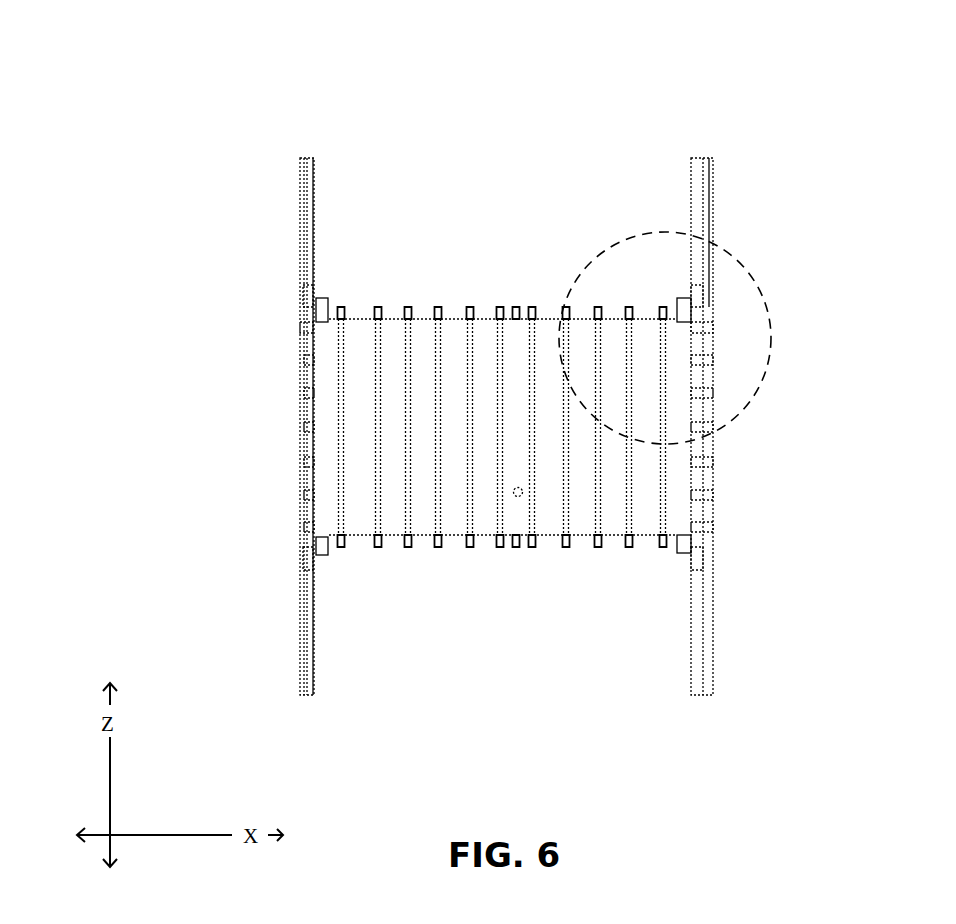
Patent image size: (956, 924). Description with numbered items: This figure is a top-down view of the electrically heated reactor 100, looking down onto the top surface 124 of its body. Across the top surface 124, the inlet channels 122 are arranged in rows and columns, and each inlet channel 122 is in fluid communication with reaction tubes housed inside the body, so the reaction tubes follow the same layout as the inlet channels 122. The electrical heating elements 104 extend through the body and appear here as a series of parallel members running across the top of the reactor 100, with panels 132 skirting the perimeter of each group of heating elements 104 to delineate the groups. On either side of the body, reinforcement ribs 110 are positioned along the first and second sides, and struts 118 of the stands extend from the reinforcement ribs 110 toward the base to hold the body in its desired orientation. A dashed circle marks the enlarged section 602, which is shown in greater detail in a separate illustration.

The reactor 100 is at (494, 350).
The electrical heating element 104 is at (432, 307).
The reinforcement rib 110 is at (262, 426).
The strut 118 is at (708, 193).
The inlet channel 122 is at (518, 496).
The top surface 124 is at (320, 347).
The panel 132 is at (515, 308).
The enlarged section 602 is at (674, 338).